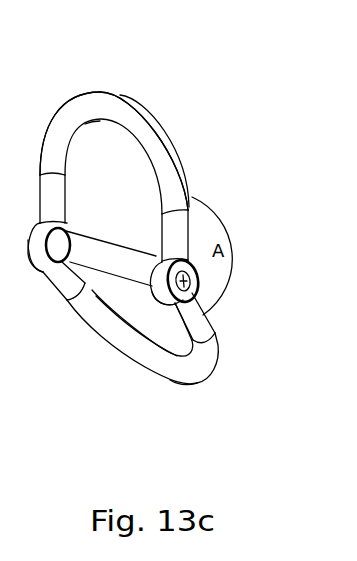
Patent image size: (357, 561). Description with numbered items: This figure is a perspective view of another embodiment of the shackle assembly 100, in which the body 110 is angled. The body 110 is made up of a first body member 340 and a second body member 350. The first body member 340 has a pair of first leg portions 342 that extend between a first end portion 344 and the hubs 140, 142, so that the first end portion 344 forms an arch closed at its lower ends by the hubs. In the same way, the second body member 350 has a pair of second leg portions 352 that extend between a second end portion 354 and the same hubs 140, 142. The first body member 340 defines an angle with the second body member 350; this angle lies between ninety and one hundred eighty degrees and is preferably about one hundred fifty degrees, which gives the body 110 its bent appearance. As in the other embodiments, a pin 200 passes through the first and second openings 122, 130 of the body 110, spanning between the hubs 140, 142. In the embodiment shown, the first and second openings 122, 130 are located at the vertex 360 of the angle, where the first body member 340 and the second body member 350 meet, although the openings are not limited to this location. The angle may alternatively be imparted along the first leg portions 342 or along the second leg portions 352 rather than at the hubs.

The connector assembly 100 is at (147, 62).
The body 110 is at (43, 114).
The first opening 122 is at (22, 240).
The second opening 130 is at (156, 259).
The hub 140 is at (42, 249).
The hub 142 is at (160, 287).
The pin 200 is at (121, 264).
The first body member 340 is at (195, 128).
The first leg portions 342 is at (47, 187).
The first end portion 344 is at (97, 102).
The second body member 350 is at (222, 350).
The second leg portions 352 is at (67, 283).
The second end portion 354 is at (188, 368).
The vertex 360 is at (183, 290).